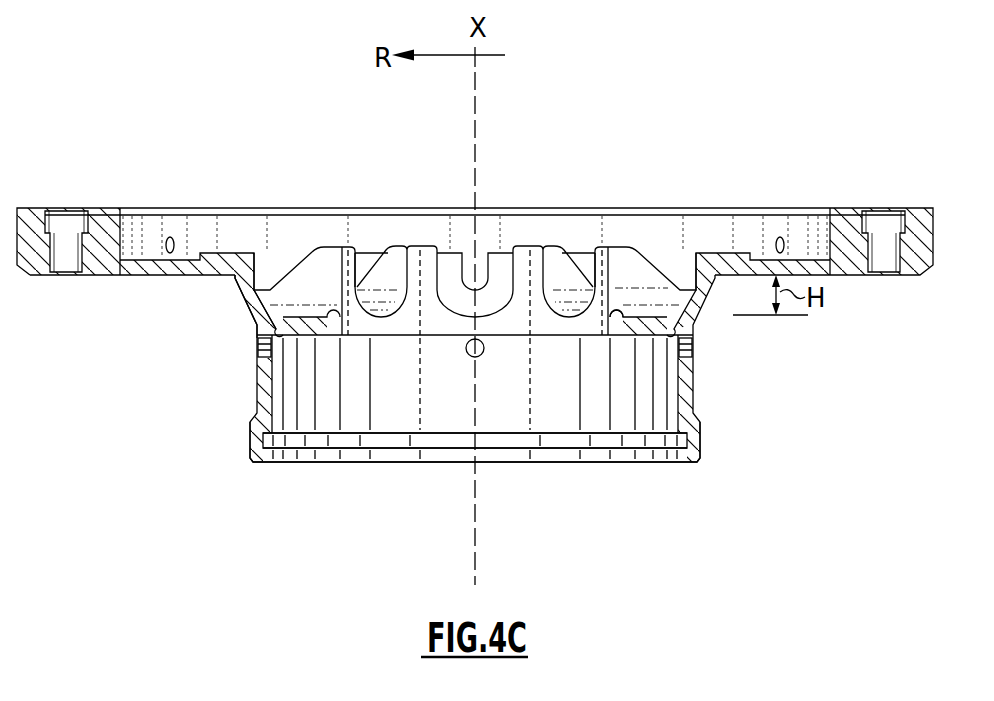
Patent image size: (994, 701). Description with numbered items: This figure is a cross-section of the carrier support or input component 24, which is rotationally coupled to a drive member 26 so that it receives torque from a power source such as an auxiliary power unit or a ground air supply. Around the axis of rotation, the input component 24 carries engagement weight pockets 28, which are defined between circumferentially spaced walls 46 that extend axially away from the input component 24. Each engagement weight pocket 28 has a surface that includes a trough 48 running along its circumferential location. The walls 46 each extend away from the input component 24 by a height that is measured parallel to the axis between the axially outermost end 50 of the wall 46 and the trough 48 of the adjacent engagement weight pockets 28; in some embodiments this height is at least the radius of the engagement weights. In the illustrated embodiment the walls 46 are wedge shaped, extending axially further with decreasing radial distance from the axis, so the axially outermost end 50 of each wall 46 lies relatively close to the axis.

The input component 24 is at (234, 302).
The drive member 26 is at (258, 462).
The engagement weight pockets 28 is at (326, 297).
The walls 46 is at (302, 256).
The trough 48 is at (612, 306).
The axially outermost end 50 is at (612, 250).